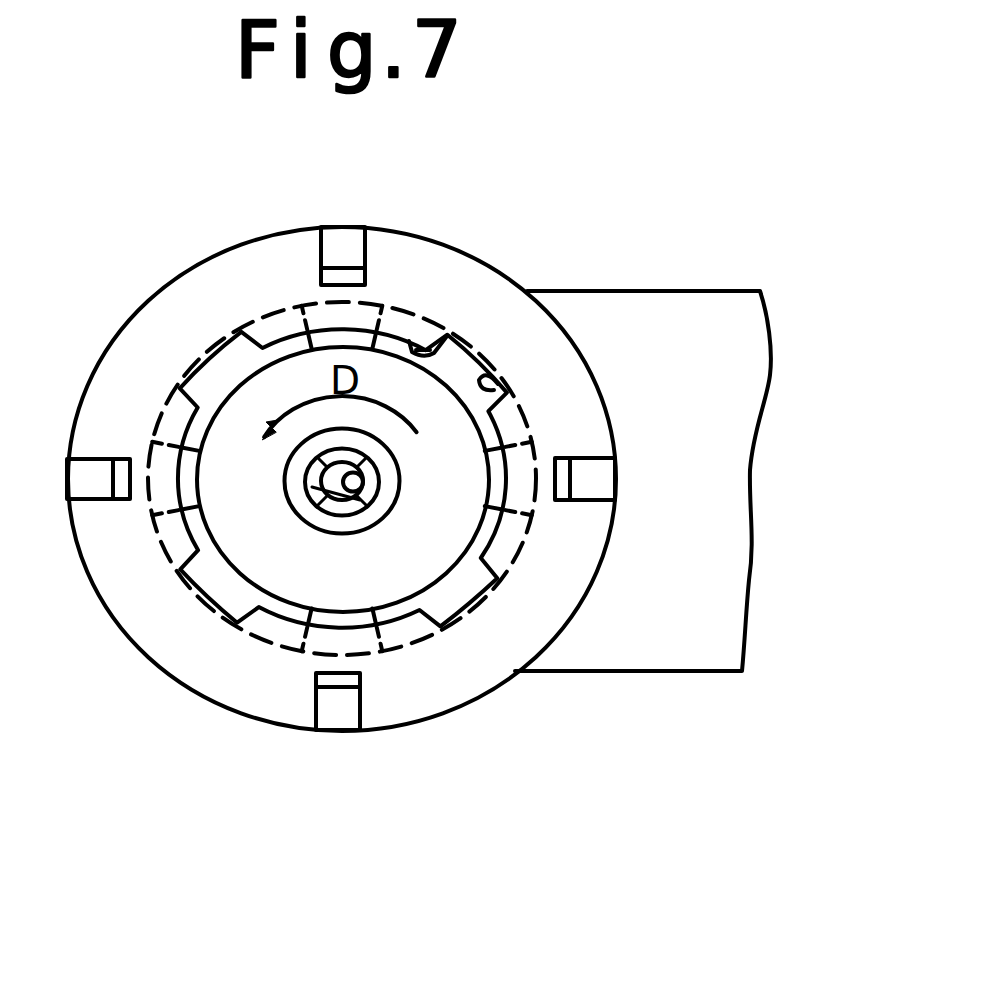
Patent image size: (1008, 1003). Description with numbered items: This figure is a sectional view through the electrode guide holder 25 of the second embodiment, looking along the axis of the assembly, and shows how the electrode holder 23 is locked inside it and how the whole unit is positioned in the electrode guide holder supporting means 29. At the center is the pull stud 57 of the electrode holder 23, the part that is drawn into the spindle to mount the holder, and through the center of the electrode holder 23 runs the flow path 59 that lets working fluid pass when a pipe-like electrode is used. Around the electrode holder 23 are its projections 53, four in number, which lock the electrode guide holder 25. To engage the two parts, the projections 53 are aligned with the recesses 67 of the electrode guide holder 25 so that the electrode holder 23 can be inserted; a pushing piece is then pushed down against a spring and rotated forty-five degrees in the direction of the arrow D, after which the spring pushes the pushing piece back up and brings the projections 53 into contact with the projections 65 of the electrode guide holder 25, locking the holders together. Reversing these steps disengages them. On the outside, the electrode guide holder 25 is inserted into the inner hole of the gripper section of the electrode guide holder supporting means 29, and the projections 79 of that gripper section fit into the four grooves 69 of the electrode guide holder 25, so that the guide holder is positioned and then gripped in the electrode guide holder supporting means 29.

The electrode holder 23 is at (223, 373).
The electrode guide holder 25 is at (177, 635).
The electrode guide holder supporting means 29 is at (737, 354).
The projections 53 is at (300, 340).
The pull stud 57 is at (307, 487).
The flow path 59 is at (357, 498).
The projections 65 is at (450, 337).
The recesses 67 is at (497, 383).
The grooves 69 is at (613, 483).
The projections 79 is at (340, 708).